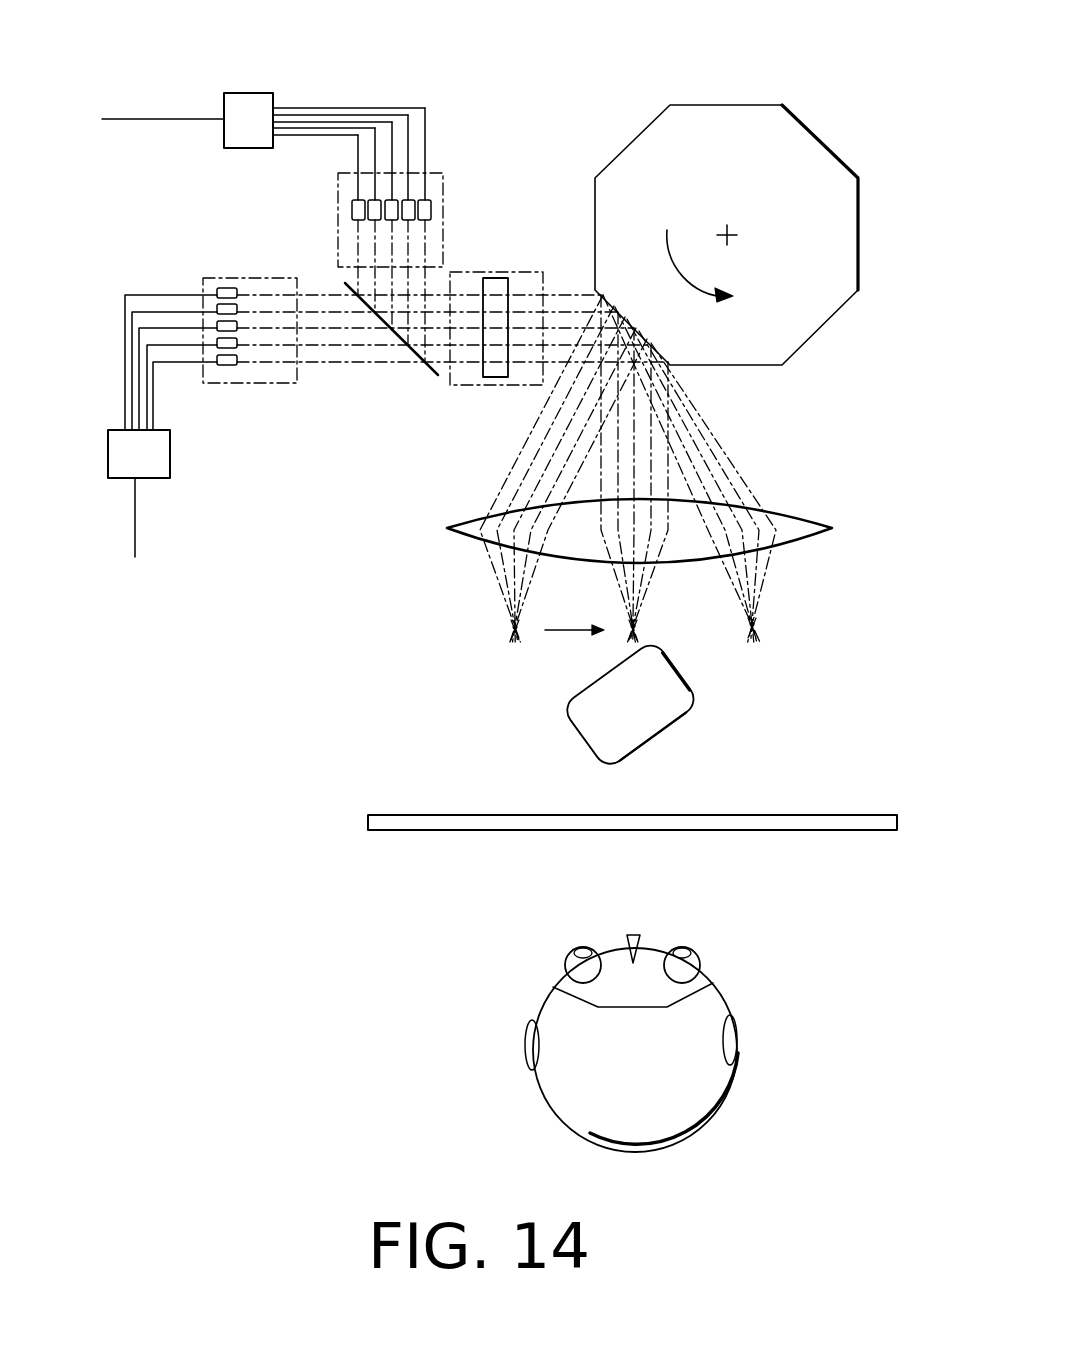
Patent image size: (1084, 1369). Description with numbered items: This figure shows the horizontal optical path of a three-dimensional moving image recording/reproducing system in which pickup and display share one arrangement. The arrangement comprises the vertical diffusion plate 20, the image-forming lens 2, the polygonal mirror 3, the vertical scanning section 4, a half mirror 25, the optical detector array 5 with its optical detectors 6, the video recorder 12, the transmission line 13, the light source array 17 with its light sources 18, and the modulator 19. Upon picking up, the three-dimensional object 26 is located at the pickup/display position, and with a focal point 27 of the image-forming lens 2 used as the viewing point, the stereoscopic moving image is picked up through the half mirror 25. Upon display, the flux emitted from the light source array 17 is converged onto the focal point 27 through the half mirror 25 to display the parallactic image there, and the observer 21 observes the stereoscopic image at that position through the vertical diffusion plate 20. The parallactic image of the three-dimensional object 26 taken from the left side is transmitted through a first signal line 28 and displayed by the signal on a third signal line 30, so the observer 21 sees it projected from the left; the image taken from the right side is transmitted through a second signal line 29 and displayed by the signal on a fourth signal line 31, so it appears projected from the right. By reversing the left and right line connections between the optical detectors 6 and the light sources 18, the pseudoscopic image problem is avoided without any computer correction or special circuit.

The image-forming lens 2 is at (800, 518).
The polygonal mirror 3 is at (812, 132).
The vertical scanning section 4 is at (493, 273).
The optical detector array 5 is at (337, 195).
The optical detectors 6 is at (433, 208).
The video recorder 12 is at (250, 93).
The transmission line 13 is at (152, 120).
The light source array 17 is at (260, 278).
The light sources 18 is at (225, 288).
The modulator 19 is at (170, 452).
The vertical diffusion plate 20 is at (820, 815).
The observer 21 is at (727, 992).
The half mirror 25 is at (433, 373).
The three-dimensional object 26 is at (702, 690).
The focal point 27 is at (510, 632).
The first signal line 28 is at (427, 113).
The second signal line 29 is at (360, 153).
The third signal line 30 is at (135, 295).
The fourth signal line 31 is at (180, 362).